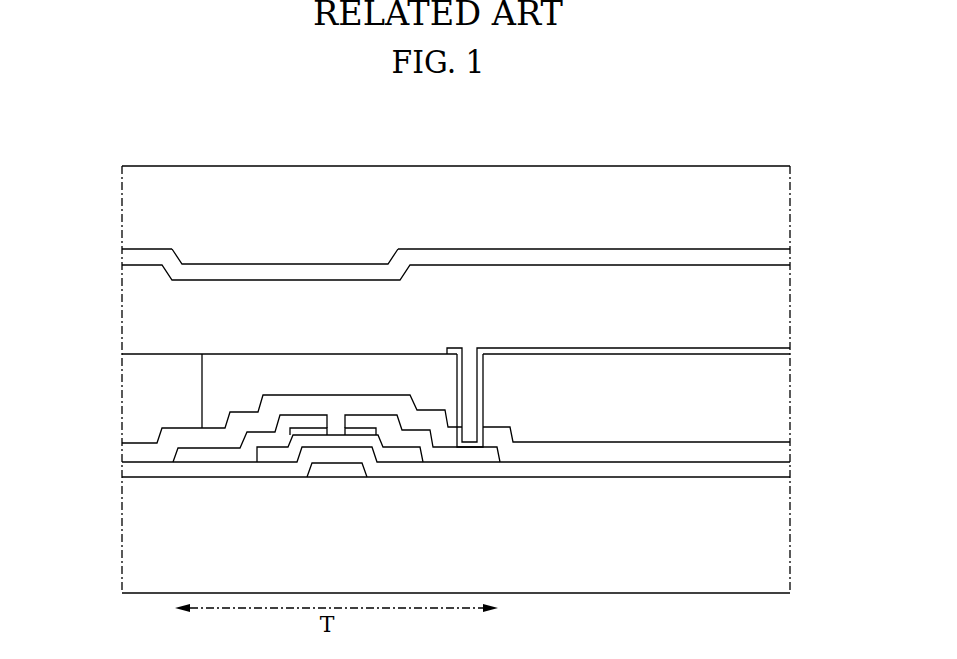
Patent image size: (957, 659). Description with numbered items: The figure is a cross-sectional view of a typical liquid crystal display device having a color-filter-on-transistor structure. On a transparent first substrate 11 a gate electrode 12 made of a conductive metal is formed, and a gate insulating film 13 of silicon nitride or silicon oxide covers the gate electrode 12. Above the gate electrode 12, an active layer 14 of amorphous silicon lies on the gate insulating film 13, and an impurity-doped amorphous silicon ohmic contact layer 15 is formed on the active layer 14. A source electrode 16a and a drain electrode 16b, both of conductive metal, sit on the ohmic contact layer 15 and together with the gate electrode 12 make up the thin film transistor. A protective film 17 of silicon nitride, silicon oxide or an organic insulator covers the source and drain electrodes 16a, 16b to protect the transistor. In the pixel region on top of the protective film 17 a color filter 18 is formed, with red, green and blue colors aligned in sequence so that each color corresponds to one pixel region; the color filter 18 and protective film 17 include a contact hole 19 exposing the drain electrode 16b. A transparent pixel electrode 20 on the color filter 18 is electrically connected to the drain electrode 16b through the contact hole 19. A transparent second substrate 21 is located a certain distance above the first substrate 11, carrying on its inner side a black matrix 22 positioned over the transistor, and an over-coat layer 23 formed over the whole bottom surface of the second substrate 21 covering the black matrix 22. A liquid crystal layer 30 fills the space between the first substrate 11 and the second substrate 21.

The first substrate 11 is at (780, 525).
The gate electrode 12 is at (337, 470).
The gate insulating film 13 is at (783, 470).
The active layer 14 is at (338, 440).
The ohmic contact layer 15 is at (305, 432).
The source electrode 16a is at (258, 437).
The drain electrode 16b is at (417, 440).
The protective film 17 is at (128, 455).
The color filter 18 is at (128, 387).
The contact hole 19 is at (470, 345).
The pixel electrode 20 is at (778, 347).
The second substrate 21 is at (429, 172).
The black matrix 22 is at (270, 250).
The over-coat layer 23 is at (563, 253).
The liquid crystal layer 30 is at (783, 293).